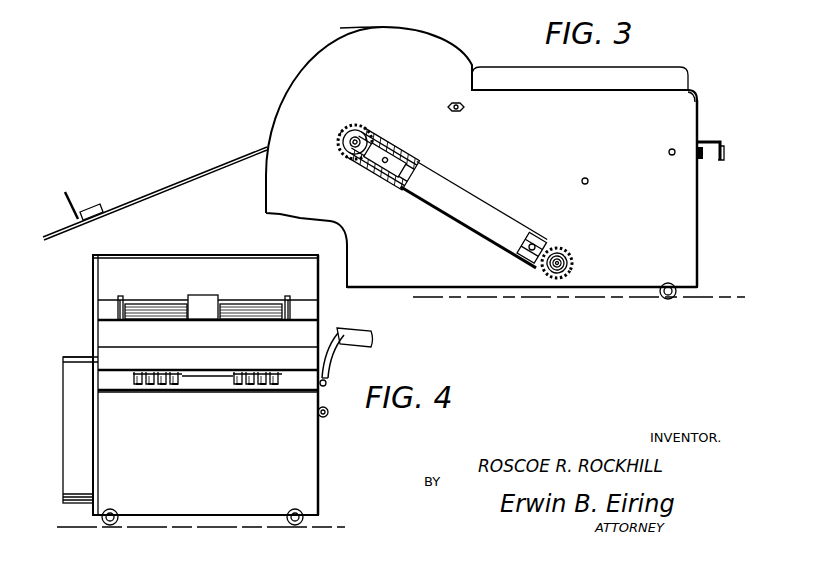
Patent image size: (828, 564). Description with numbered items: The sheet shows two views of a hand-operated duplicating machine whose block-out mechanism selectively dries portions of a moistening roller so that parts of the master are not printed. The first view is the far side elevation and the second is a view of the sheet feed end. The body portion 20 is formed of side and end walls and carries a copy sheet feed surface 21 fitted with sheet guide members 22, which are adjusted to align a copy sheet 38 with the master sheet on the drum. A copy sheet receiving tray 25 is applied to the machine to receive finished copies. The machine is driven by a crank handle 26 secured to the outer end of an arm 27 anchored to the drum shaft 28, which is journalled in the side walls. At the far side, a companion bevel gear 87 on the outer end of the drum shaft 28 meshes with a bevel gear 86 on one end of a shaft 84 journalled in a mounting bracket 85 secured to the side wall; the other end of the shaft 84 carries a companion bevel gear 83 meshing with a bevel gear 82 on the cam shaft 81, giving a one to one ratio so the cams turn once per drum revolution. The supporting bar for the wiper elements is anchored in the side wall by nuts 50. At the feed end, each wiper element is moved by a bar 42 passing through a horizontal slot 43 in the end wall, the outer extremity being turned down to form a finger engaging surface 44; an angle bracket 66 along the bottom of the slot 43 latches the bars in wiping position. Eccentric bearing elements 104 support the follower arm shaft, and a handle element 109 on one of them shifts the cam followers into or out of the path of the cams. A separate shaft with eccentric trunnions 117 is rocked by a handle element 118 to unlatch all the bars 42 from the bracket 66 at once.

In FIG. 3, the body portion 20 is at (470, 53).
In FIG. 4, the body portion 20 is at (326, 444).
In FIG. 4, the copy sheet feed surface 21 is at (160, 310).
In FIG. 3, the sheet guide members 22 is at (547, 73).
In FIG. 4, the sheet guide members 22 is at (120, 296).
In FIG. 3, the copy sheet receiving tray 25 is at (214, 166).
In FIG. 3, the crank handle 26 is at (322, 0).
In FIG. 4, the crank handle 26 is at (371, 331).
In FIG. 4, the arm 27 is at (344, 367).
In FIG. 3, the drum shaft 28 is at (363, 137).
In FIG. 4, the copy sheet 38 is at (234, 313).
In FIG. 3, the bar 42 is at (703, 133).
In FIG. 4, the bar 42 is at (162, 373).
In FIG. 4, the slot 43 is at (205, 377).
In FIG. 3, the finger engaging surface 44 is at (727, 151).
In FIG. 4, the finger engaging surface 44 is at (161, 389).
In FIG. 3, the nuts 50 is at (465, 109).
In FIG. 3, the angle bracket 66 is at (703, 166).
In FIG. 4, the angle bracket 66 is at (201, 392).
In FIG. 3, the cam shaft 81 is at (574, 265).
In FIG. 3, the bevel gear 82 is at (570, 259).
In FIG. 3, the companion bevel gear 83 is at (551, 246).
In FIG. 3, the shaft 84 is at (412, 168).
In FIG. 3, the mounting bracket 85 is at (398, 188).
In FIG. 3, the bevel gear 86 is at (366, 170).
In FIG. 3, the companion bevel gear 87 is at (343, 152).
In FIG. 3, the eccentric bearing elements 104 is at (586, 178).
In FIG. 4, the handle element 109 is at (329, 413).
In FIG. 3, the eccentric trunnions 117 is at (670, 150).
In FIG. 4, the handle element 118 is at (335, 392).